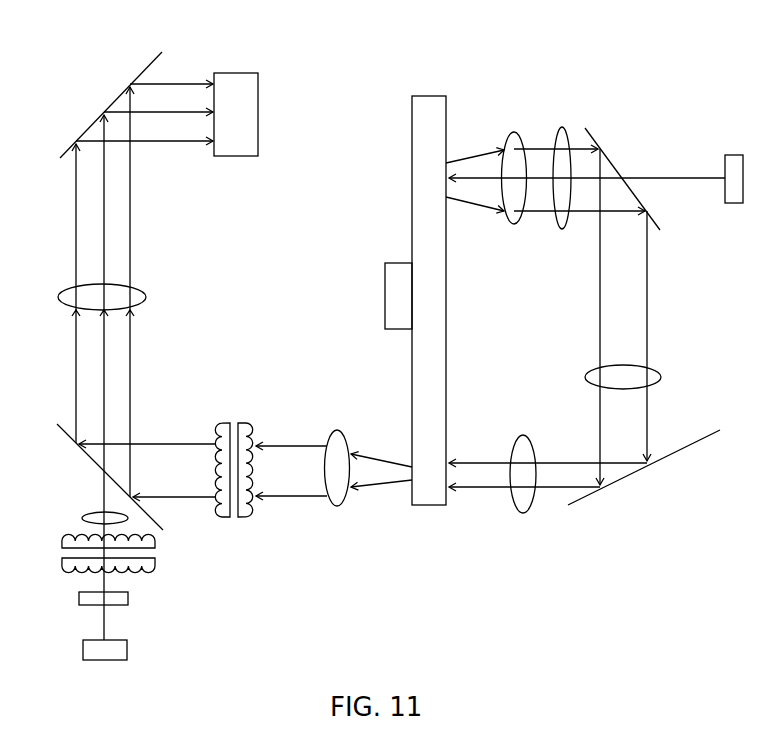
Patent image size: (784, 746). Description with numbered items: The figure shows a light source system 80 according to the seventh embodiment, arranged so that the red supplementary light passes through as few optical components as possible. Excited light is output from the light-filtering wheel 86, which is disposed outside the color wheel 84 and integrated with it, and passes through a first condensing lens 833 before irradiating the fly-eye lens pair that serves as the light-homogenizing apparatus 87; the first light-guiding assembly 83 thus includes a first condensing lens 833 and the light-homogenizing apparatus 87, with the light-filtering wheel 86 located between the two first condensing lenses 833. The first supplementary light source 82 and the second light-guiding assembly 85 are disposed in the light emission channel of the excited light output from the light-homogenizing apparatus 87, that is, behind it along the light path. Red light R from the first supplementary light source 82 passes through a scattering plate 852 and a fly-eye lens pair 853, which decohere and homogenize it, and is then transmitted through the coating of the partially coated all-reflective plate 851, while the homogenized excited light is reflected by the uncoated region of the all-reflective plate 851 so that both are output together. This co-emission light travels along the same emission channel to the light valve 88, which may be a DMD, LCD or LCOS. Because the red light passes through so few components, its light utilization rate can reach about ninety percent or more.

The light source system 80 is at (377, 336).
The first supplementary light source 82 is at (129, 641).
The first light-guiding assembly 83 is at (522, 532).
The color wheel 84 is at (466, 290).
The light-filtering wheel 86 is at (449, 107).
The second light-guiding assembly 85 is at (120, 518).
The all-reflective plate 851 is at (94, 462).
The scattering plate 852 is at (79, 597).
The fly-eye lens pair 853 is at (62, 545).
The light-homogenizing apparatus 87 is at (244, 421).
The light valve 88 is at (255, 159).
The first condensing lens 833 is at (335, 432).